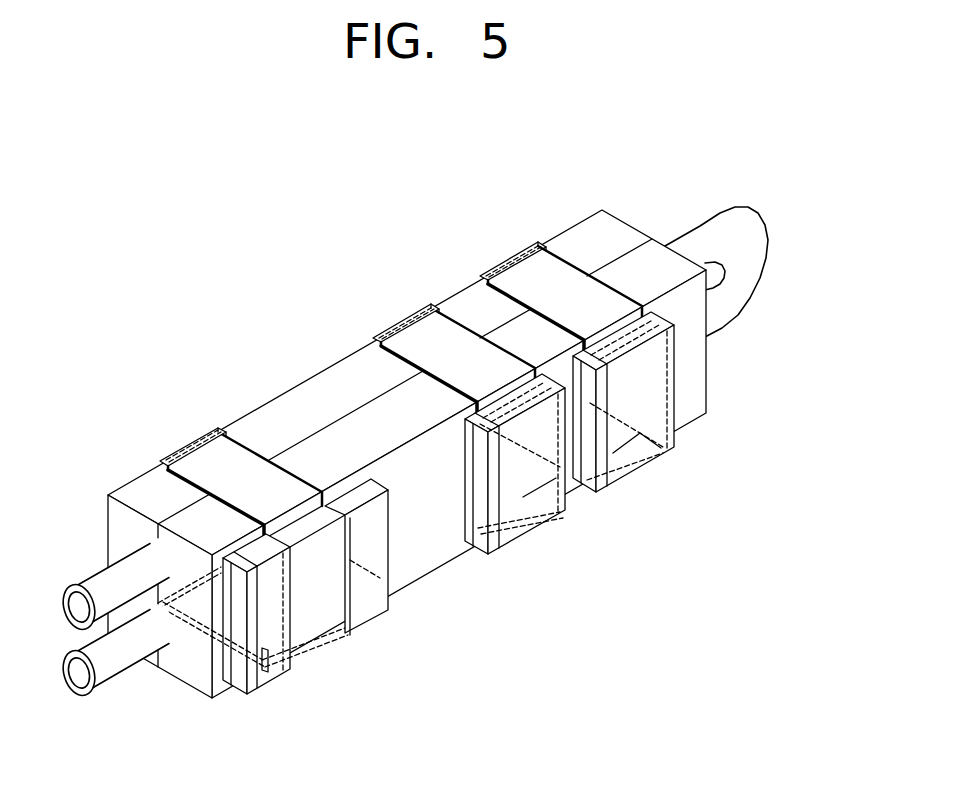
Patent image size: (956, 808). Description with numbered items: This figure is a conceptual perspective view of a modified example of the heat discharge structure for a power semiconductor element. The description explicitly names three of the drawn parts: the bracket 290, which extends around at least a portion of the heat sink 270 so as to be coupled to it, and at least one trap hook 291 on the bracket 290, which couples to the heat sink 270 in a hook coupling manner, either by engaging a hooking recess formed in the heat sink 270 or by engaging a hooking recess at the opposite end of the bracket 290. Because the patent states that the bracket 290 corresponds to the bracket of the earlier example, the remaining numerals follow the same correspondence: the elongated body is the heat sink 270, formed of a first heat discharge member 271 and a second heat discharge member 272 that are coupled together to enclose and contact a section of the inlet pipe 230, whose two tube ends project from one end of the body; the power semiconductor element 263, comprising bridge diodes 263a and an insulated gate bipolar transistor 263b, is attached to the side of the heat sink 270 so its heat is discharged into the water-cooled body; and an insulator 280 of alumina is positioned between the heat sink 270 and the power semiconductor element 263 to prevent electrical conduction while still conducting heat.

The refrigerant pipe 230 is at (95, 586).
The fixing bracket 263 is at (482, 507).
The first fixing bracket 263a is at (362, 571).
The second fixing bracket 263b is at (495, 500).
The heat sink 270 is at (568, 232).
The first cover part 271 is at (618, 282).
The second cover part 272 is at (580, 246).
The end bracket 280 is at (230, 672).
The bracket 290 is at (201, 453).
The trap hook 291 is at (160, 464).